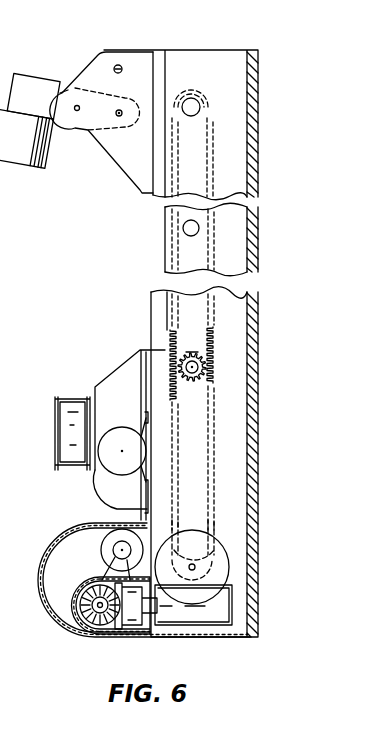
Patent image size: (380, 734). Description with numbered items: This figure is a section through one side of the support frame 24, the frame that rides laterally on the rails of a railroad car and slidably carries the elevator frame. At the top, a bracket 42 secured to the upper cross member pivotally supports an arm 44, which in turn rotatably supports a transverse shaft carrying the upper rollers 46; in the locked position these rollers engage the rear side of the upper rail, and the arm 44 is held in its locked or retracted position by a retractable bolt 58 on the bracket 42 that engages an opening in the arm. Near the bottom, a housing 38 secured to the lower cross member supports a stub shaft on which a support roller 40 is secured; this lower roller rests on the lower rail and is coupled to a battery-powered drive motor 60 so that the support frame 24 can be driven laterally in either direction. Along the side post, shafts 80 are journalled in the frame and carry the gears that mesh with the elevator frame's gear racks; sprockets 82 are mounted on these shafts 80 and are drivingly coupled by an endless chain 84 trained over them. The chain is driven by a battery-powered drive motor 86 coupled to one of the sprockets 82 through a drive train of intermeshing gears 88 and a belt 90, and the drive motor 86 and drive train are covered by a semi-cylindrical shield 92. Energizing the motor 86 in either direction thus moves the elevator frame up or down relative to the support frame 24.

The support frame 24 is at (268, 620).
The housing 38 is at (127, 366).
The support roller 40 is at (73, 406).
The bracket 42 is at (112, 60).
The arm 44 is at (66, 88).
The roller 46 is at (22, 162).
The retractable bolt 58 is at (77, 112).
The drive motor 60 is at (113, 463).
The shaft 80 is at (220, 101).
The sprocket 82 is at (183, 348).
The endless chain 84 is at (215, 354).
The drive motor 86 is at (103, 548).
The intermeshing gears 88 is at (97, 636).
The belt 90 is at (97, 576).
The semi-cylindrical shield 92 is at (50, 543).